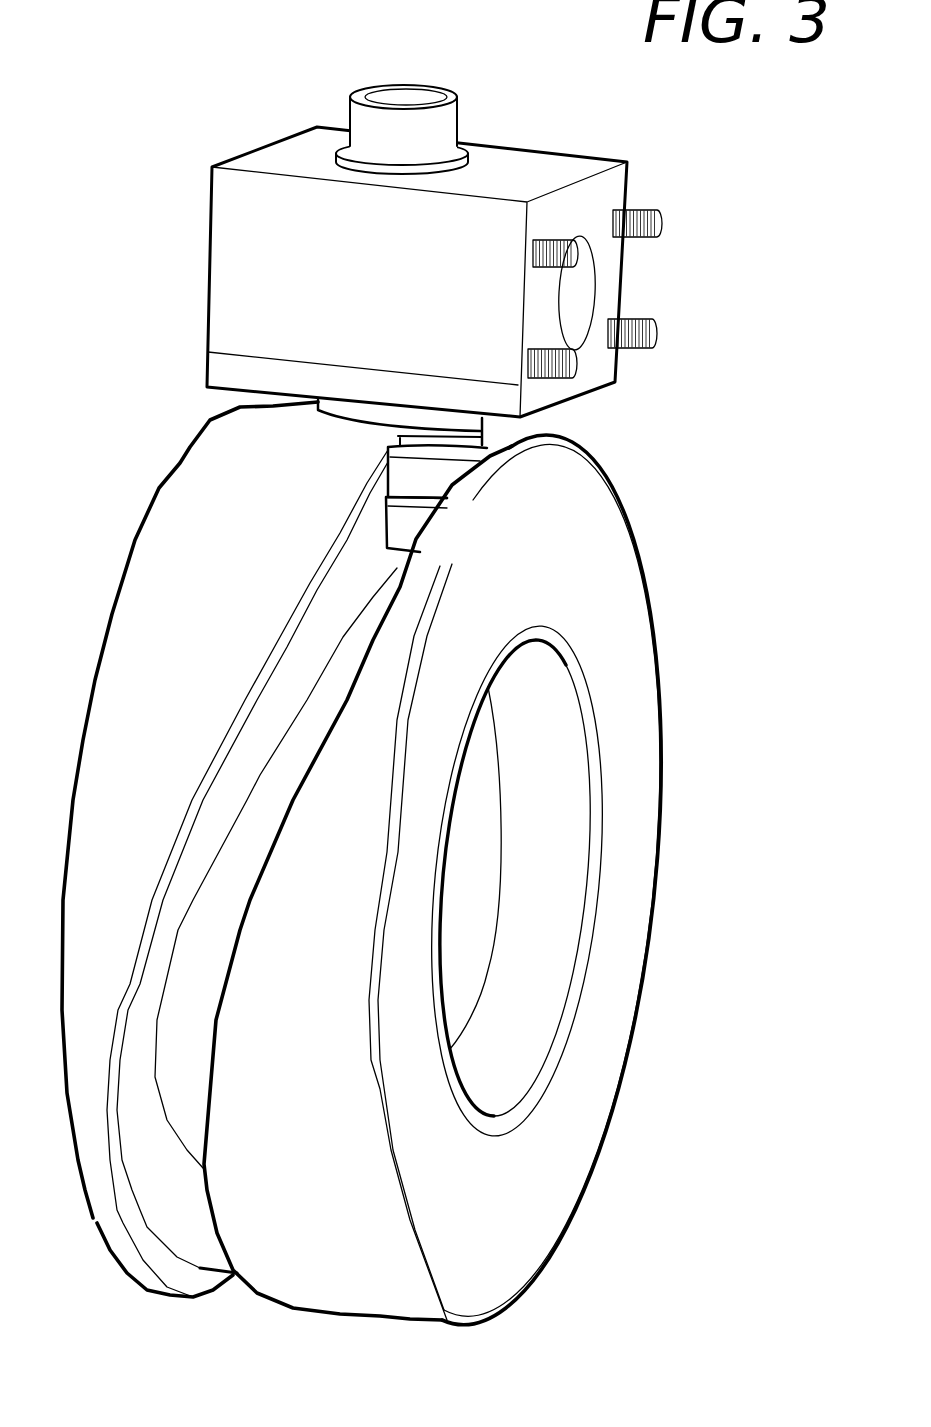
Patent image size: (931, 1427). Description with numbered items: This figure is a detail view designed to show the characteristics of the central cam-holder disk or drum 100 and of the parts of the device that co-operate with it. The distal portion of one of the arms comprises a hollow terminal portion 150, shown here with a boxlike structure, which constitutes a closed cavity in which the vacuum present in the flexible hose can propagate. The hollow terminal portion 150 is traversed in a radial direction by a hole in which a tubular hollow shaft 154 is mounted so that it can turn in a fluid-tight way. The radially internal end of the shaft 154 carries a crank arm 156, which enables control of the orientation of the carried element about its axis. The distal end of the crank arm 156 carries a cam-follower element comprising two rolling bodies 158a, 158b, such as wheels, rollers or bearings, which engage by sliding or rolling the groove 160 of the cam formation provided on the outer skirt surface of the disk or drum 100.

The cam-holder disk or drum 100 is at (625, 537).
The hollow terminal portion 150 is at (627, 243).
The hollow shaft 154 is at (353, 88).
The crank arm 156 is at (362, 408).
The rolling body 158a is at (413, 462).
The rolling body 158b is at (413, 508).
The cam formation groove 160 is at (184, 1037).